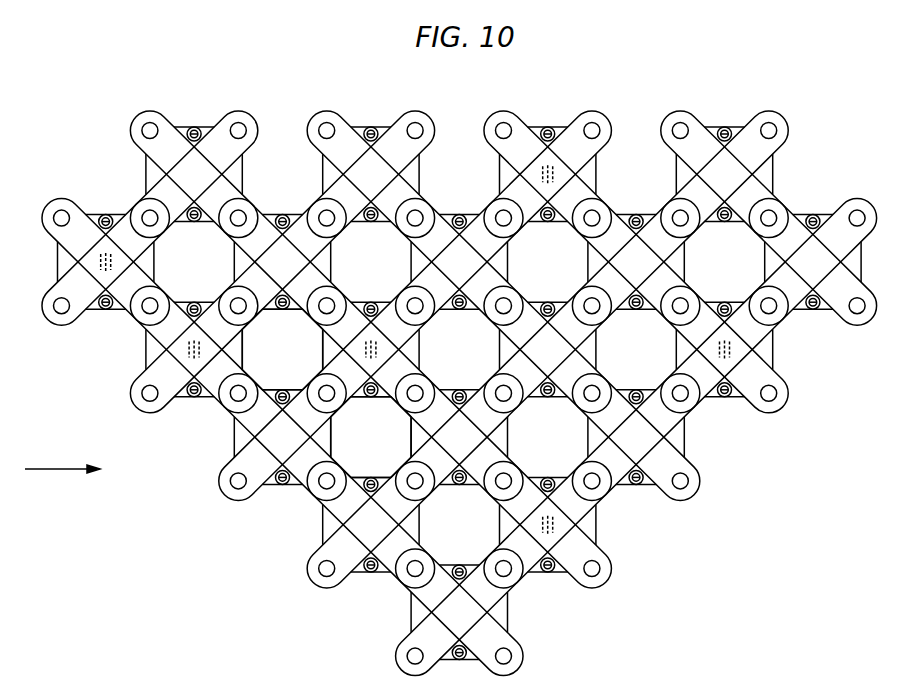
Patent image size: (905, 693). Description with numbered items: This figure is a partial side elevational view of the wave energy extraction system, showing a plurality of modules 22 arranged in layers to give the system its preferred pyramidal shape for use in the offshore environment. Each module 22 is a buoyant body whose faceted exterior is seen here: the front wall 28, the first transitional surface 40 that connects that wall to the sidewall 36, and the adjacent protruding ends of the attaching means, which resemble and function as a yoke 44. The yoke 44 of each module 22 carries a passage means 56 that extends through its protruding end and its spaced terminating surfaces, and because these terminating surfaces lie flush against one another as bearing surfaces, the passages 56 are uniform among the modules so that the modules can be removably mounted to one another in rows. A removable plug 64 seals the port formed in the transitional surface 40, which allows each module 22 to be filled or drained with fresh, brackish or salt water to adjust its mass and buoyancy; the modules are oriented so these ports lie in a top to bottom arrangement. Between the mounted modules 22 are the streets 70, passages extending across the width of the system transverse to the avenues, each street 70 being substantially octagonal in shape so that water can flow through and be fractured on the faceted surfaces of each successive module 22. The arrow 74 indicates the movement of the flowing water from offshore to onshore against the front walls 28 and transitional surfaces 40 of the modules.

The module 22 is at (721, 110).
The front wall 28 is at (58, 265).
The first sidewall 36 is at (275, 434).
The transition surface 40 is at (148, 356).
The yoke 44 is at (143, 113).
The passage means 56 is at (240, 128).
The removable plug 64 is at (547, 127).
The street 70 is at (257, 355).
The arrow 74 is at (50, 469).